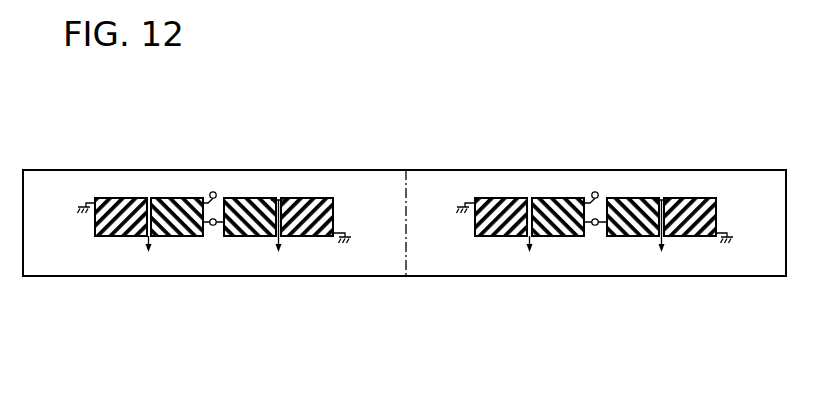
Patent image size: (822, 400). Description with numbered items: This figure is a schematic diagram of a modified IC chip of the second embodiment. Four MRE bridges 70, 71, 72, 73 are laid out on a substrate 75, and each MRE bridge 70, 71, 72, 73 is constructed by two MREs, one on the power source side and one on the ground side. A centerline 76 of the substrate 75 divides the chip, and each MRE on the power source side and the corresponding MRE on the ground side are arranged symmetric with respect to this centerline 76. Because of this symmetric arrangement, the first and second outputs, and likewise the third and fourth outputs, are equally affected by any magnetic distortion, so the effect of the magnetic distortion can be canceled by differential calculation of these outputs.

The MRE bridge 70 is at (125, 198).
The MRE bridge 71 is at (303, 200).
The MRE bridge 72 is at (553, 200).
The MRE bridge 73 is at (683, 200).
The substrate 75 is at (760, 264).
The centerline 76 is at (407, 200).